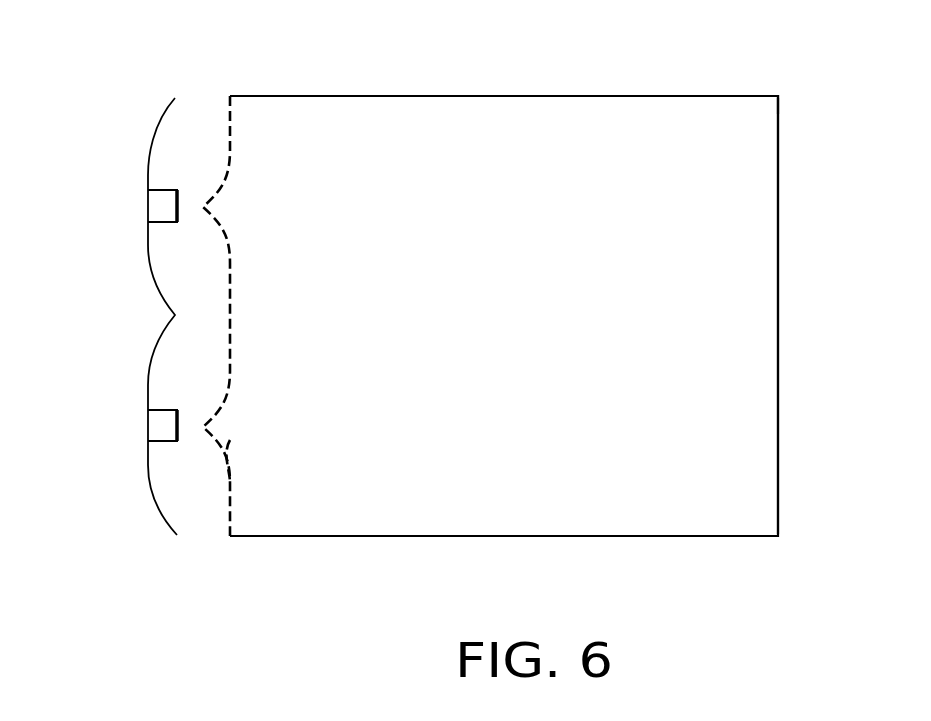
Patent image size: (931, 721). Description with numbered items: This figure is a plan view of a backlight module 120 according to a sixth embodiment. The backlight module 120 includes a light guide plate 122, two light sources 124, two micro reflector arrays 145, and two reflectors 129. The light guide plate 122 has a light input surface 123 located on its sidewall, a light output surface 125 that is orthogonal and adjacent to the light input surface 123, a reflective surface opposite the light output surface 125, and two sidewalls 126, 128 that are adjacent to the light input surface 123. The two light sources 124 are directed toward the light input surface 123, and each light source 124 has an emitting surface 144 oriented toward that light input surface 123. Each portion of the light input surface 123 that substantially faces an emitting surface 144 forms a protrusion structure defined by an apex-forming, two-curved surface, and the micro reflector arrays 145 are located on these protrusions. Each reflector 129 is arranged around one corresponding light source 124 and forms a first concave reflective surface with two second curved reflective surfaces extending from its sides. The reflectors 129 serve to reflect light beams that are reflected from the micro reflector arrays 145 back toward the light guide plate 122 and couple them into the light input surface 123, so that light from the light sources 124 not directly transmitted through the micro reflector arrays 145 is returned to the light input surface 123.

The backlight module 120 is at (416, 58).
The light guide plate 122 is at (589, 86).
The light input surface 123 is at (226, 104).
The light source 124 is at (158, 209).
The light output surface 125 is at (743, 261).
The sidewall 126 is at (701, 93).
The sidewall 128 is at (645, 539).
The reflector 129 is at (147, 167).
The emitting surface 144 is at (183, 218).
The micro reflector array 145 is at (225, 466).